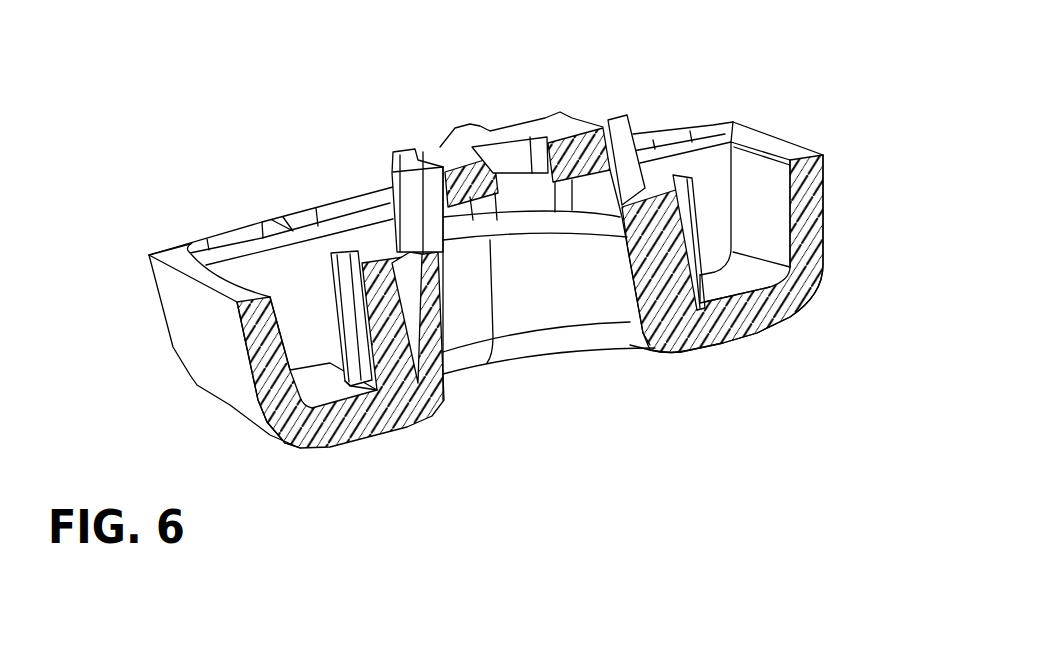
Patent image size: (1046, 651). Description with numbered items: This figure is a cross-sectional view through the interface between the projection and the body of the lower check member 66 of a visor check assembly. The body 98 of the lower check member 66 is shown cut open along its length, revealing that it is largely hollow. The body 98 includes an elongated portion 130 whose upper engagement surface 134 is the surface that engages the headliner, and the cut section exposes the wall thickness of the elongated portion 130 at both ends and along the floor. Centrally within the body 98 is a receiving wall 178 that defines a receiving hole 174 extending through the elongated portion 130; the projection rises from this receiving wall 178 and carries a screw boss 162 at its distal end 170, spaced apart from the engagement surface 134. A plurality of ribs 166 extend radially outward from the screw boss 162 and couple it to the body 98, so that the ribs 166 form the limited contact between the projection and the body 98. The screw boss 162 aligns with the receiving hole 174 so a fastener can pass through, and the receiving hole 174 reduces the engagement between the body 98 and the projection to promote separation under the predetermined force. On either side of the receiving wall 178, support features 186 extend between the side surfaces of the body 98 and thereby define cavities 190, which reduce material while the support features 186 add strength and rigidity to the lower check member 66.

The lower check member 66 is at (820, 283).
The body 98 is at (297, 428).
The elongated portion 130 is at (813, 218).
The engagement surface 134 is at (177, 253).
The screw boss 162 is at (540, 130).
The ribs 166 is at (630, 112).
The distal end 170 is at (463, 168).
The receiving hole 174 is at (549, 294).
The receiving wall 178 is at (440, 305).
The support features 186 is at (697, 177).
The cavities 190 is at (753, 197).